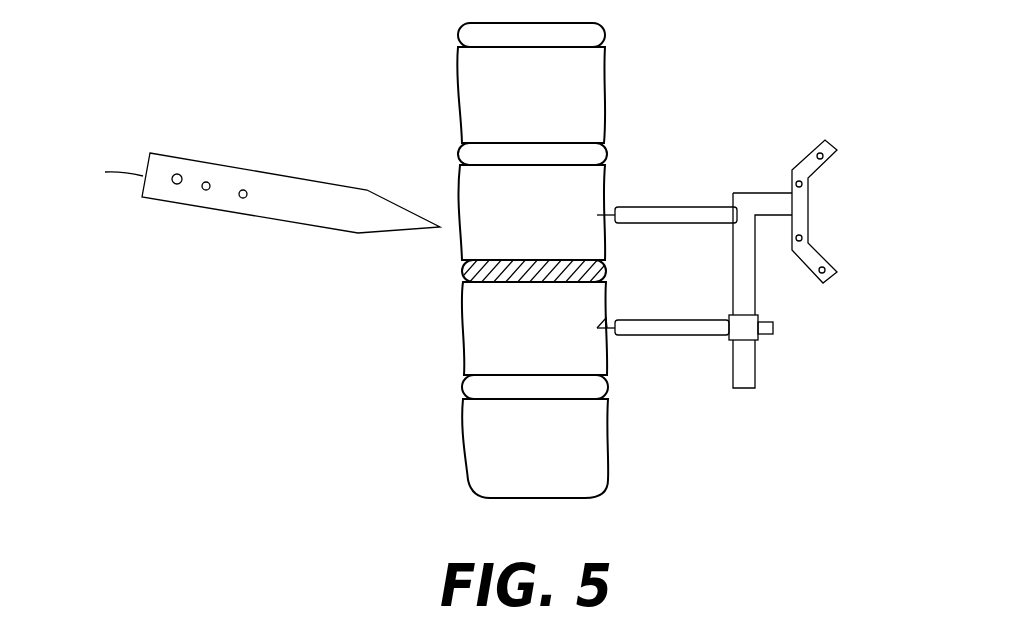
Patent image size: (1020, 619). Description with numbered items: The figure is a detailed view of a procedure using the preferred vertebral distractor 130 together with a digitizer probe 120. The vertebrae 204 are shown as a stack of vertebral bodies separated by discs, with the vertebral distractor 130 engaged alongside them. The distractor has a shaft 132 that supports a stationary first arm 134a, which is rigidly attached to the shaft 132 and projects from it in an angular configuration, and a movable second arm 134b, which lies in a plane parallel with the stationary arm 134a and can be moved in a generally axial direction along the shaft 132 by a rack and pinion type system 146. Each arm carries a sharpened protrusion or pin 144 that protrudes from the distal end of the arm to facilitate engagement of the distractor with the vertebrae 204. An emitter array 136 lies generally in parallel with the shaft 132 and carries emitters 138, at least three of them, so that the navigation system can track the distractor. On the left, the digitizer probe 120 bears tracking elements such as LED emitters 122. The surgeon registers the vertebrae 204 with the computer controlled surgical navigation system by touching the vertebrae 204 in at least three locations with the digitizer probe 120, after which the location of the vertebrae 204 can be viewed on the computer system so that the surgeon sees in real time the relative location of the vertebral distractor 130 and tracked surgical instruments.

The digitizer probe 120 is at (272, 191).
The LED emitters 122 is at (174, 184).
The vertebrae 204 is at (462, 240).
The vertebral distractor 130 is at (765, 246).
The shaft 132 is at (745, 365).
The stationary first arm 134a is at (678, 206).
The movable second arm 134b is at (662, 337).
The emitter array 136 is at (808, 150).
The emitters 138 is at (830, 157).
The pin 144 is at (604, 320).
The rack and pinion type system 146 is at (775, 328).